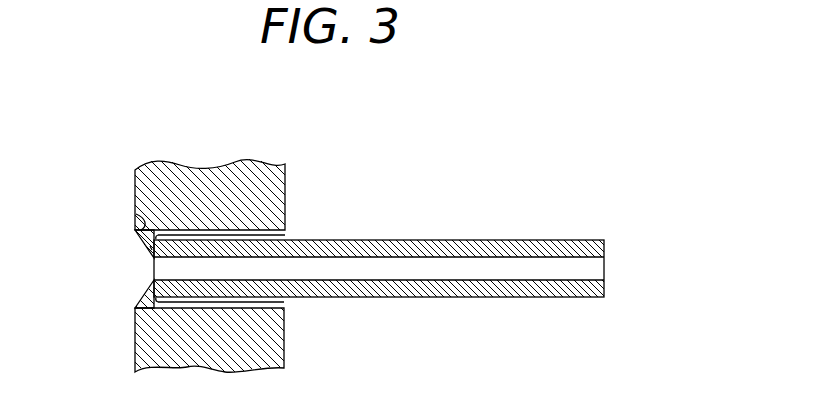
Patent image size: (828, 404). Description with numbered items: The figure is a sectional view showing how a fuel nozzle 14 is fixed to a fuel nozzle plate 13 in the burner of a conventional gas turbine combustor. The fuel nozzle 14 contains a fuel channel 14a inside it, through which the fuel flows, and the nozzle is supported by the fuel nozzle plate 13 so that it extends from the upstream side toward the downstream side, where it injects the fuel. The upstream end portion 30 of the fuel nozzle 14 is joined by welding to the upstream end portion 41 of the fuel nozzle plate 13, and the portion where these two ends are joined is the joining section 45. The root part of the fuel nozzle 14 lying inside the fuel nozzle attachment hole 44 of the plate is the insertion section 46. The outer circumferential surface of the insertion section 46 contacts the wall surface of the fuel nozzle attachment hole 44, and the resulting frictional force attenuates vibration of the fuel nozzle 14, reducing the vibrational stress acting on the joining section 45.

The fuel nozzle plate 13 is at (272, 192).
The fuel nozzle 14 is at (486, 243).
The fuel channel 14a is at (594, 270).
The upstream end portion of the fuel nozzle 30 is at (152, 250).
The upstream end portion of the fuel nozzle plate 41 is at (136, 214).
The fuel nozzle attachment hole 44 is at (272, 234).
The joining section 45 is at (142, 244).
The insertion section 46 is at (220, 303).